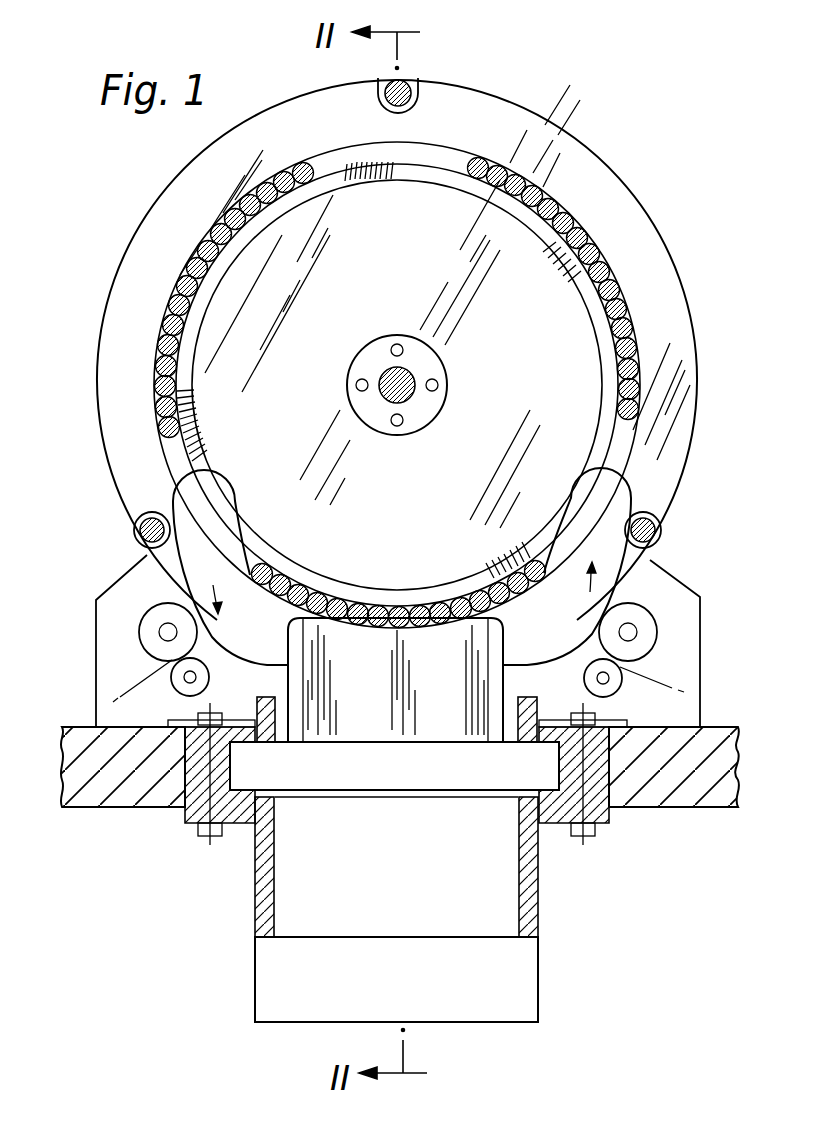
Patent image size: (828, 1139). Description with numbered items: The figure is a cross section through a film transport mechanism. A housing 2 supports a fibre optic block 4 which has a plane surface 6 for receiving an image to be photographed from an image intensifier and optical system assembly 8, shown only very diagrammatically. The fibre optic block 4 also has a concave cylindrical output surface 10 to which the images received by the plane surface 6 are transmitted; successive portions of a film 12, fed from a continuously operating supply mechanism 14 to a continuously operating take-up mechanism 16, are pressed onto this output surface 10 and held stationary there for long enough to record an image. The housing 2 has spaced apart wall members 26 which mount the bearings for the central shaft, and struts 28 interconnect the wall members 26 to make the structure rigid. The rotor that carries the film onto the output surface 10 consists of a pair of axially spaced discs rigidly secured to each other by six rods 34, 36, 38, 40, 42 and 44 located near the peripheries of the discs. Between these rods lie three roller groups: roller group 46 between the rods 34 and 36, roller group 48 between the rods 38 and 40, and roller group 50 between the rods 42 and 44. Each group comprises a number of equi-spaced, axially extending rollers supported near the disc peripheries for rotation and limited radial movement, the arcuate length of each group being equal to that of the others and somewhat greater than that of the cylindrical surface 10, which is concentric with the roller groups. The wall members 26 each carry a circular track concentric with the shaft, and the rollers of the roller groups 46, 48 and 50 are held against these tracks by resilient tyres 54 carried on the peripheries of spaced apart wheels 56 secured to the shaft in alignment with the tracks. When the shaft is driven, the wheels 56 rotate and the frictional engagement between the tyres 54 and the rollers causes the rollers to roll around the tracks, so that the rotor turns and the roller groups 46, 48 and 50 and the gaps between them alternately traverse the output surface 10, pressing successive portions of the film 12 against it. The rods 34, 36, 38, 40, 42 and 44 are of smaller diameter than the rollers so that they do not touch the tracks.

The housing 2 is at (137, 807).
The fibre optic block 4 is at (452, 687).
The plane surface 6 is at (433, 742).
The image intensifier and optical system assembly 8 is at (293, 908).
The concave cylindrical output surface 10 is at (347, 627).
The film 12 is at (587, 603).
The supply mechanism 14 is at (642, 650).
The take-up mechanism 16 is at (143, 647).
The wall members 26 is at (135, 566).
The struts 28 is at (418, 88).
The rod 34 is at (300, 163).
The rod 36 is at (160, 430).
The rod 38 is at (263, 566).
The rod 40 is at (537, 562).
The rod 42 is at (620, 409).
The rod 44 is at (473, 180).
The roller group 46 is at (205, 231).
The roller group 48 is at (383, 603).
The roller group 50 is at (587, 282).
The resilient tyres 54 is at (403, 603).
The wheels 56 is at (450, 486).